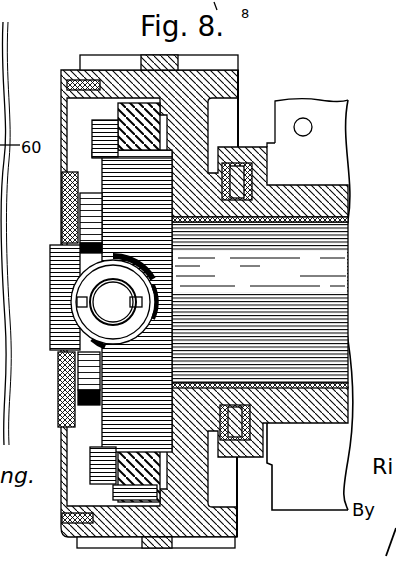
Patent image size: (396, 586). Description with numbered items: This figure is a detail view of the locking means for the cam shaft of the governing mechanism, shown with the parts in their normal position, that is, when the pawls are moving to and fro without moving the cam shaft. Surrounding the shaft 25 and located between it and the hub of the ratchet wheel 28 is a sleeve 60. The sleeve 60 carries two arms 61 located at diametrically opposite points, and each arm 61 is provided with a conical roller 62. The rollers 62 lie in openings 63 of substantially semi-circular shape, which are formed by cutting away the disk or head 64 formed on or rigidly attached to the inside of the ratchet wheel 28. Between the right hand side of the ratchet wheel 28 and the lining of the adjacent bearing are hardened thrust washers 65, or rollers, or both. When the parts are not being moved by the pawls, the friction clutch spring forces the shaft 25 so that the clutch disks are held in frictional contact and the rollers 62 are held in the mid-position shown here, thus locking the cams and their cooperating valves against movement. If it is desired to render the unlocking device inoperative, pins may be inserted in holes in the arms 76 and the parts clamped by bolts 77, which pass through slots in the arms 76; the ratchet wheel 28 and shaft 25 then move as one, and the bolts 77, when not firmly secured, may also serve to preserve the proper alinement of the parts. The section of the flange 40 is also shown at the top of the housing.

The ratchet wheel 28 is at (240, 83).
The flange ring 40 is at (147, 57).
The sleeve 60 is at (260, 302).
The thrust washers 65 is at (250, 174).
The arms 76 is at (120, 116).
The disk or head 64 is at (103, 174).
The bolts 77 is at (92, 130).
The shaft 25 is at (63, 254).
The conical roller 62 is at (52, 283).
The openings 63 is at (128, 258).
The arms 61 is at (113, 302).